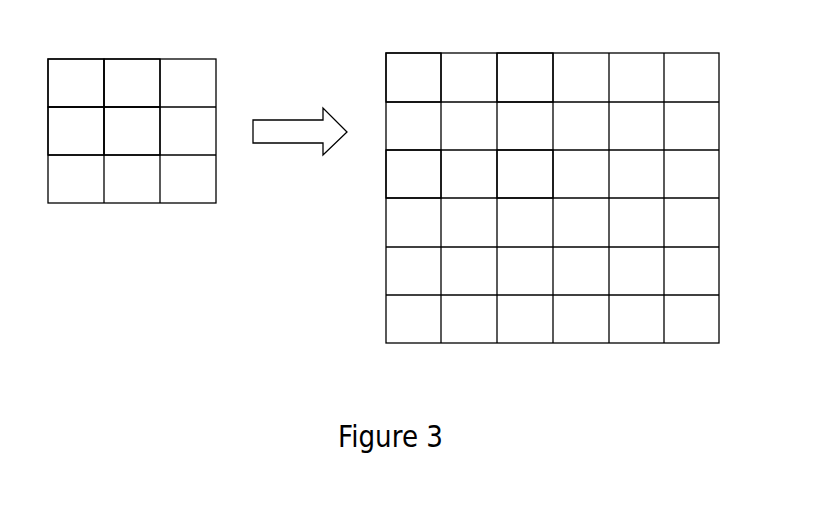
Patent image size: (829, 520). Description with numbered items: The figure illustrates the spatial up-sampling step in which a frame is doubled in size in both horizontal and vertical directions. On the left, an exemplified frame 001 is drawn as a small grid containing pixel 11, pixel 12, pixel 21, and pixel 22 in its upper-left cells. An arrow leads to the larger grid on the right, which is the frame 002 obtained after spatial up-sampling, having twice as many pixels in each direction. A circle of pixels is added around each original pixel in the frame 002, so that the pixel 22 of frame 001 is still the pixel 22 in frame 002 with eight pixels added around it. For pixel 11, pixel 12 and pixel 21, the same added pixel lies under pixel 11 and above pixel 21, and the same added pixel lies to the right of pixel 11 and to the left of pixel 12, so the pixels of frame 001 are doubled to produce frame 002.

The frame 001 is at (108, 59).
The frame 002 is at (483, 53).
The pixel 11 is at (244, 80).
The pixel 12 is at (328, 80).
The pixel 21 is at (244, 152).
The pixel 22 is at (328, 152).